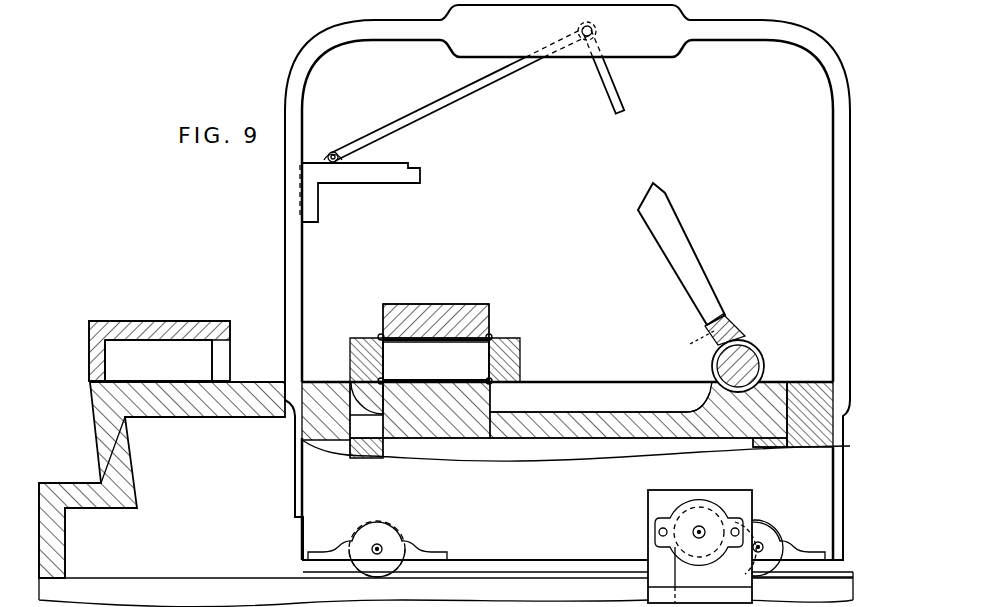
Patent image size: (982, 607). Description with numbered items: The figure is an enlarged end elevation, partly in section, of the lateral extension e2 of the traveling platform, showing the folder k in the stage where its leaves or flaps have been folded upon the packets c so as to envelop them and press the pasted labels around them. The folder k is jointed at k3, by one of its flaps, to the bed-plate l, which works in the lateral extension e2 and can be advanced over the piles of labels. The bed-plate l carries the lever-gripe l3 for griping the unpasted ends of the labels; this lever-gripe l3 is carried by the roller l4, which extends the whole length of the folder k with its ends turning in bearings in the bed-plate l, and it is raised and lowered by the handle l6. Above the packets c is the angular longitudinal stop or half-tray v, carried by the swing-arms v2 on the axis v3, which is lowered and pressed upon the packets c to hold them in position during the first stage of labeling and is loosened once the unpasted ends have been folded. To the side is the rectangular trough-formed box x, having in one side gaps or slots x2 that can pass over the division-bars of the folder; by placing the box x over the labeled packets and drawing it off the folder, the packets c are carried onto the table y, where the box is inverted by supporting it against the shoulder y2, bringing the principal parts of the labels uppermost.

The trough-formed box x is at (159, 339).
The gaps or slots x2 is at (215, 362).
The table y is at (162, 480).
The shoulder y2 is at (98, 446).
The angular longitudinal stop or half-tray v is at (360, 187).
The swing-arms v2 is at (508, 78).
The axis v3 is at (593, 31).
The folder k is at (378, 337).
The joint of folder k3 is at (490, 384).
The packets c is at (436, 360).
The bed-plate l is at (741, 425).
The lever-gripe l3 is at (708, 347).
The roller l4 is at (765, 365).
The handle l6 is at (681, 254).
The lateral extension of the traveling platform e2 is at (567, 282).